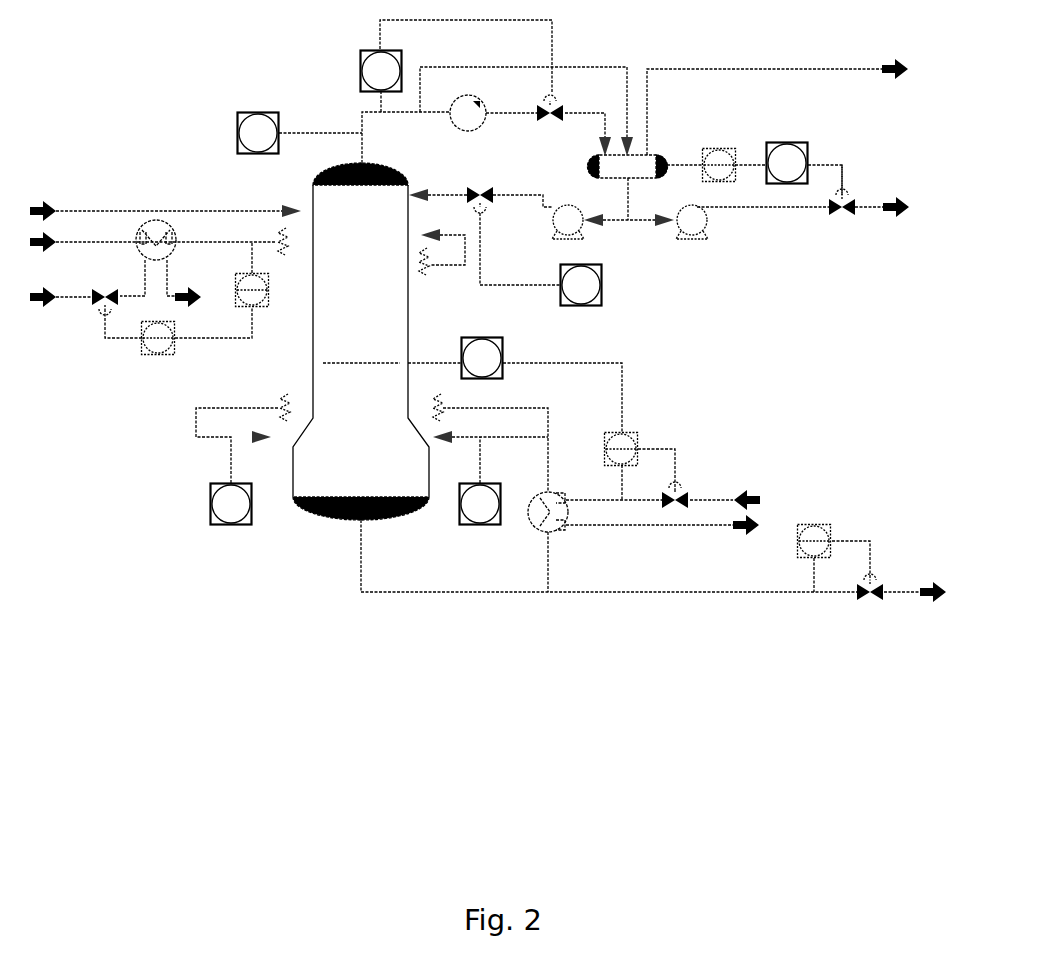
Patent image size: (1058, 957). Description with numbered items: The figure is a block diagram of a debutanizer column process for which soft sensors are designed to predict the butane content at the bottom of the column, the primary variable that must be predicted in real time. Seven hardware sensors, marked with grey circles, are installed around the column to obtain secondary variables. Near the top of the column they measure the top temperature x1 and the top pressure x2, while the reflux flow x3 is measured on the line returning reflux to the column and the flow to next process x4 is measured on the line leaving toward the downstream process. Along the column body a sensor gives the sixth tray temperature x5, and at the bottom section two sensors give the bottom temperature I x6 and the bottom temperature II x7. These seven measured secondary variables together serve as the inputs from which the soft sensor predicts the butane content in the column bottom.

The top temperature x1 is at (300, 133).
The top pressure x2 is at (381, 71).
The reflux flow x3 is at (581, 285).
The flow to next process x4 is at (787, 163).
The 6th tray temperature x5 is at (482, 358).
The bottom temperature I x6 is at (231, 504).
The bottom temperature II x7 is at (480, 504).